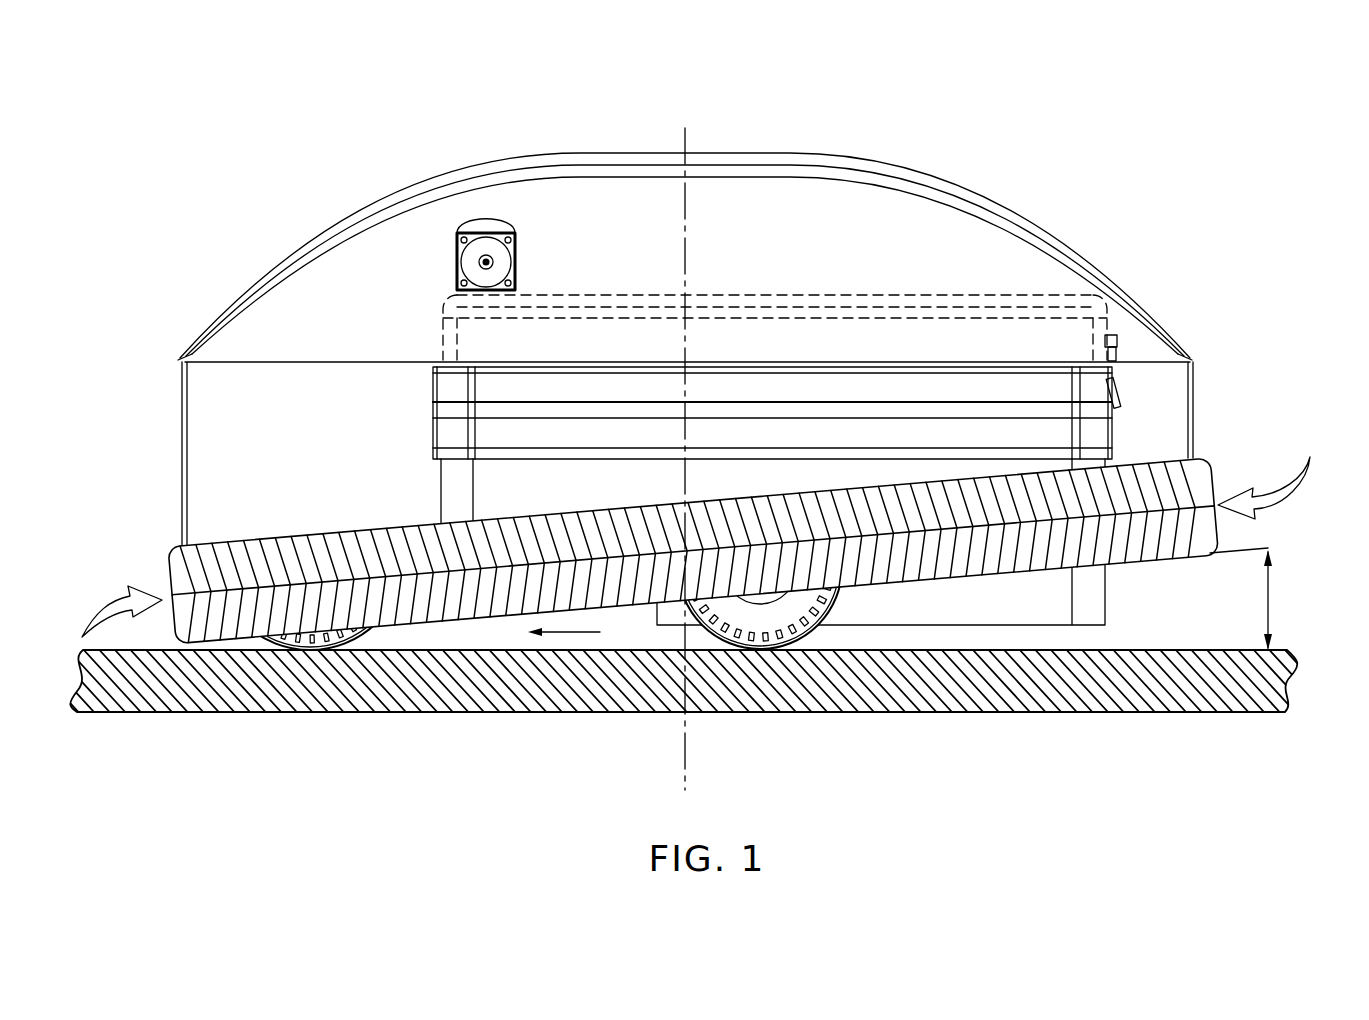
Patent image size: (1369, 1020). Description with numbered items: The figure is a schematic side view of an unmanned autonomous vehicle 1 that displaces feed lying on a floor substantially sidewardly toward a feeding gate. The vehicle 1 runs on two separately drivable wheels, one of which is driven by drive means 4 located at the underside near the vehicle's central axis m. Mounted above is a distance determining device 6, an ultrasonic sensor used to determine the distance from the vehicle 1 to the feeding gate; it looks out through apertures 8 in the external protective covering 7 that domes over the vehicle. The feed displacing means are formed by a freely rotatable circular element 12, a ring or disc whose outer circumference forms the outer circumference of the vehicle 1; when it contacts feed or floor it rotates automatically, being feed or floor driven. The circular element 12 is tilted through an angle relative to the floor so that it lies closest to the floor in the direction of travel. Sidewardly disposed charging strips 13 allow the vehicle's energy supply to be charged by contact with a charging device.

The unmanned autonomous vehicle 1 is at (1003, 172).
The drive means 4 is at (720, 616).
The distance determining device 6 is at (485, 262).
The protective covering 7 is at (640, 155).
The apertures 8 is at (517, 252).
The circular element 12 is at (172, 583).
The charging strips 13 is at (1003, 390).
The center axis m is at (686, 133).